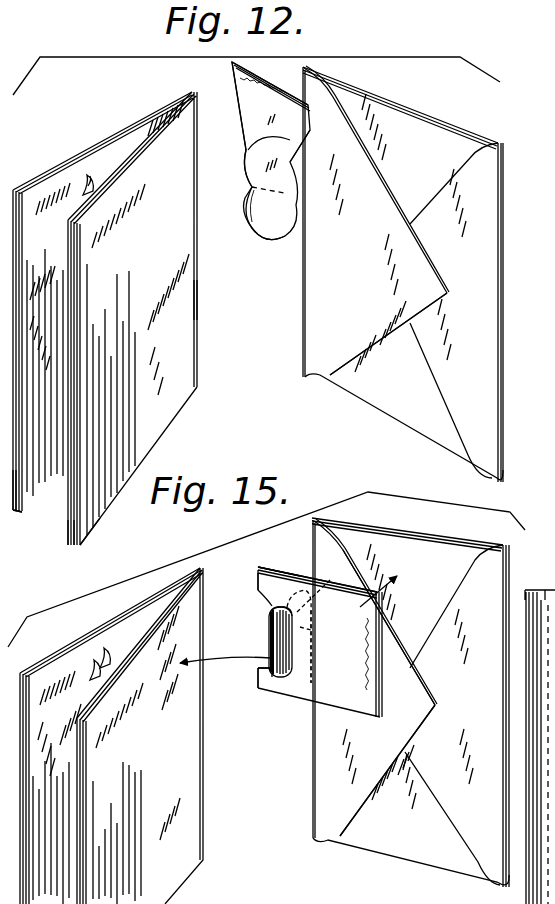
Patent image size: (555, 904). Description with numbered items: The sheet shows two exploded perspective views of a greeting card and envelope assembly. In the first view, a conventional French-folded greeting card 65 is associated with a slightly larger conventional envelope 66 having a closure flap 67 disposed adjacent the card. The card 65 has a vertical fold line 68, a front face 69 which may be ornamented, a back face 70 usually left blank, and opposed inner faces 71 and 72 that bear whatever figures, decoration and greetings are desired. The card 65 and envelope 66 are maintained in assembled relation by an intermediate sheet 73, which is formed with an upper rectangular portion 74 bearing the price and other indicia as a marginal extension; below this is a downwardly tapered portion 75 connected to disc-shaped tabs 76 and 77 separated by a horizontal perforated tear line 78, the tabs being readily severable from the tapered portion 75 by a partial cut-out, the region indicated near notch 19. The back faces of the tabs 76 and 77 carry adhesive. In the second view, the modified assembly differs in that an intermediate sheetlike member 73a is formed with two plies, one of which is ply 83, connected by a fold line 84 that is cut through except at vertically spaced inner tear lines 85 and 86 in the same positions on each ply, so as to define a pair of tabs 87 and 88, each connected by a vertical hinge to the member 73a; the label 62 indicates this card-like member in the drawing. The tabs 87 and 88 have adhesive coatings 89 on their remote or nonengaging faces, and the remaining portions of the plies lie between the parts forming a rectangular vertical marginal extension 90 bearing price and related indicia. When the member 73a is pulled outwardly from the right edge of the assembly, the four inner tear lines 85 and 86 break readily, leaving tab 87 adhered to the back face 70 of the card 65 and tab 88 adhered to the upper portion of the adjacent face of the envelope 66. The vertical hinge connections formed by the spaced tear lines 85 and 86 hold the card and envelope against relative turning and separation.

In FIG. 12, the notch in tab 19 is at (286, 139).
In FIG. 15, the tab card 62 is at (258, 572).
In FIG. 12, the folded greeting card 65 is at (117, 151).
In FIG. 15, the folded greeting card 65 is at (140, 618).
In FIG. 12, the envelope 66 is at (423, 130).
In FIG. 15, the envelope 66 is at (438, 555).
In FIG. 12, the closure flap 67 is at (362, 304).
In FIG. 15, the closure flap 67 is at (388, 769).
In FIG. 12, the vertical fold line 68 is at (197, 297).
In FIG. 12, the front face 69 is at (26, 507).
In FIG. 12, the back face 70 is at (157, 416).
In FIG. 15, the back face 70 is at (167, 898).
In FIG. 12, the inner face 71 is at (128, 132).
In FIG. 12, the inner face 72 is at (66, 544).
In FIG. 12, the intermediate sheet 73 is at (254, 120).
In FIG. 15, the intermediate sheetlike member 73a is at (285, 728).
In FIG. 12, the upper rectangular portion 74 is at (232, 70).
In FIG. 12, the downwardly tapered portion 75 is at (248, 108).
In FIG. 12, the disc-shaped tab 76 is at (250, 163).
In FIG. 12, the disc-shaped tab 77 is at (255, 210).
In FIG. 12, the perforated tear line 78 is at (258, 185).
In FIG. 15, the ply 83 is at (290, 553).
In FIG. 15, the fold line 84 is at (258, 584).
In FIG. 15, the inner tear line 85 is at (362, 583).
In FIG. 15, the inner tear line 86 is at (295, 657).
In FIG. 15, the tab 87 is at (268, 635).
In FIG. 15, the tab 88 is at (270, 617).
In FIG. 15, the adhesive coating 89 is at (272, 677).
In FIG. 15, the rectangular vertical marginal extension 90 is at (374, 656).